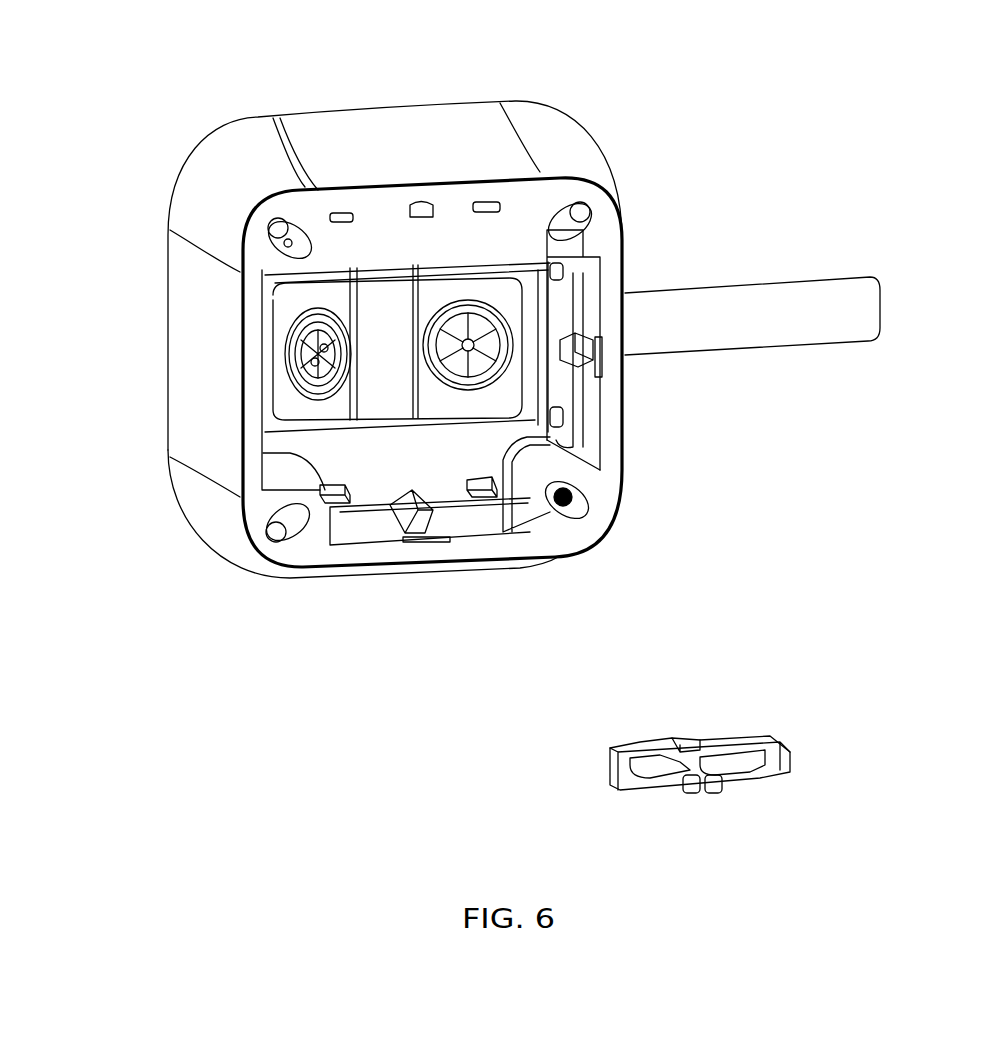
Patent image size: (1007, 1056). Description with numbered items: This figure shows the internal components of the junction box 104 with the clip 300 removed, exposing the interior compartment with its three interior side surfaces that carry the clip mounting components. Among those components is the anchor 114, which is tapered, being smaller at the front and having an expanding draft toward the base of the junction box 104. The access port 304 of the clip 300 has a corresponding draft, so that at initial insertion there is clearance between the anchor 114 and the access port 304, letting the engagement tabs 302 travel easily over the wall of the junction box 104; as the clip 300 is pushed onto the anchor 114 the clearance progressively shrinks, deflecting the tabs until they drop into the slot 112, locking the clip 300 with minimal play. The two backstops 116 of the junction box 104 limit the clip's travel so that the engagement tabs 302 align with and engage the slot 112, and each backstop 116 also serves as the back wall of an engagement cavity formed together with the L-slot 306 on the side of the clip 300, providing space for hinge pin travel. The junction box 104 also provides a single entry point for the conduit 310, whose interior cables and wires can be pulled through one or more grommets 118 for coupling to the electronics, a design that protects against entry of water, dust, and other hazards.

The junction box 104 is at (318, 145).
The slot 112 is at (600, 358).
The anchor 114 is at (421, 203).
The backstop 116 is at (330, 213).
The grommet 118 is at (440, 348).
The clip 300 is at (531, 766).
The engagement tab 302 is at (680, 810).
The access port 304 is at (688, 733).
The L-slot 306 is at (617, 777).
The conduit 310 is at (846, 330).